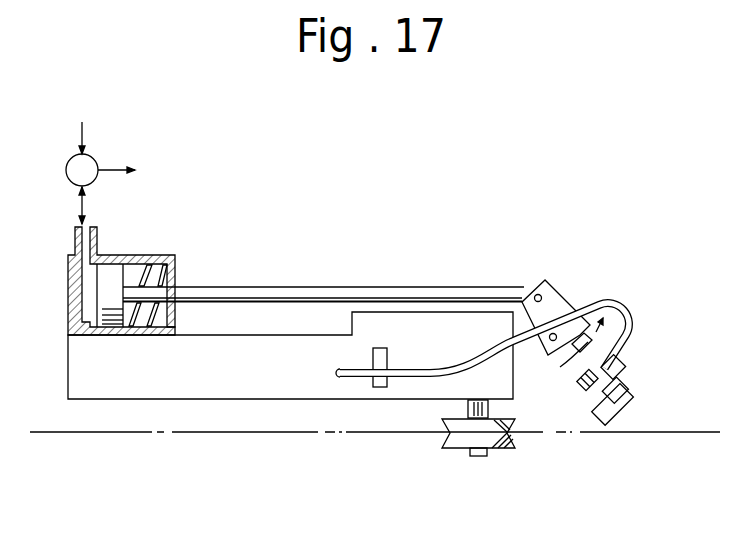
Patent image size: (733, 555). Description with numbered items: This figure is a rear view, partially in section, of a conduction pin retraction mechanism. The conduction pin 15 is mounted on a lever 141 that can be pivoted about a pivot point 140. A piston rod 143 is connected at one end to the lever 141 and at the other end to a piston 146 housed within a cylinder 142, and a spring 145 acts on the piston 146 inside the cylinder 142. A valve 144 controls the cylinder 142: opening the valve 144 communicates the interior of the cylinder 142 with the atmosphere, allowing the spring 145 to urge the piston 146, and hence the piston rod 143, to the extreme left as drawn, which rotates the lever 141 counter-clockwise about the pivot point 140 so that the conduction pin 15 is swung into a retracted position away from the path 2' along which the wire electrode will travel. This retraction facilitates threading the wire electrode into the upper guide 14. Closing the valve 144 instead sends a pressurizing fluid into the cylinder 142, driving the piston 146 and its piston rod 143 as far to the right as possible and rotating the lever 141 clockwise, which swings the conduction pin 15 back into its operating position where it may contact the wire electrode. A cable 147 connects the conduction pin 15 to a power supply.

The valve 144 is at (94, 157).
The cylinder 142 is at (123, 257).
The spring 145 is at (173, 255).
The piston 146 is at (120, 336).
The piston rod 143 is at (257, 289).
The lever 141 is at (555, 293).
The pivot point 140 is at (550, 357).
The cable 147 is at (609, 300).
The conduction pin 15 is at (616, 418).
The upper guide 14 is at (498, 447).
The path 2' is at (375, 466).